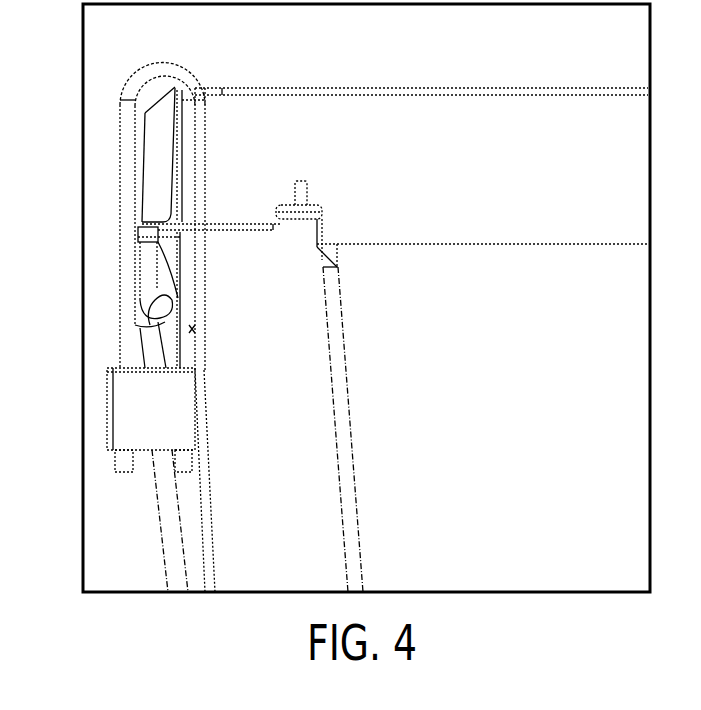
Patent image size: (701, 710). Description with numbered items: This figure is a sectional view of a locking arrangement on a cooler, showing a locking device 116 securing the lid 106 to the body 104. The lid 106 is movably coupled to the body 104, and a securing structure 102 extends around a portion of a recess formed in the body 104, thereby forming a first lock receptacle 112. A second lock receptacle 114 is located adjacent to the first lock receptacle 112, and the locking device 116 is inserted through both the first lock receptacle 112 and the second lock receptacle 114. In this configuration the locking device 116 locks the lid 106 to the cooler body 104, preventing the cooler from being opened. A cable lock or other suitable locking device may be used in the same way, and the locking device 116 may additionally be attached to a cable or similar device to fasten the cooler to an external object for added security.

The securing structure 102 is at (135, 275).
The body 104 is at (511, 422).
The lid 106 is at (511, 182).
The first lock receptacle 112 is at (207, 232).
The second lock receptacle 114 is at (207, 95).
The locking device 116 is at (171, 419).